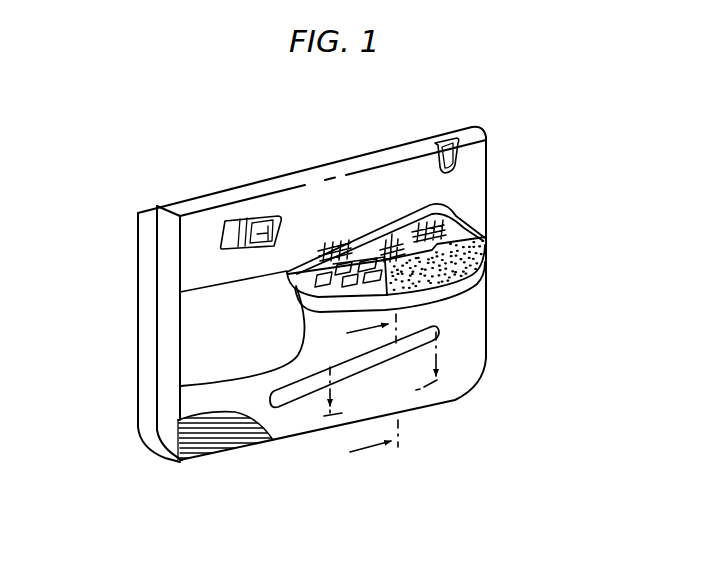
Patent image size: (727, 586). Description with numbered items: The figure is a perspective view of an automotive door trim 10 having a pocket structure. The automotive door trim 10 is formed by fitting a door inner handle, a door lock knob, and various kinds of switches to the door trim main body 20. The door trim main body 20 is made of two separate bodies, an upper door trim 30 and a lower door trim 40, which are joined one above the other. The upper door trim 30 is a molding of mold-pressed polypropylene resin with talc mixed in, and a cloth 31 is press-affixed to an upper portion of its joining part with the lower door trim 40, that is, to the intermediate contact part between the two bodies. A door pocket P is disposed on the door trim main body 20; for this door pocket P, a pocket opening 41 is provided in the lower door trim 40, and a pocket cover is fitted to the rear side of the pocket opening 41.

The automotive door trim 10 is at (153, 474).
The door trim main body 20 is at (581, 224).
The upper door trim 30 is at (478, 198).
The cloth 31 is at (370, 238).
The lower door trim 40 is at (468, 315).
The pocket opening 41 is at (392, 360).
The door pocket P is at (355, 402).